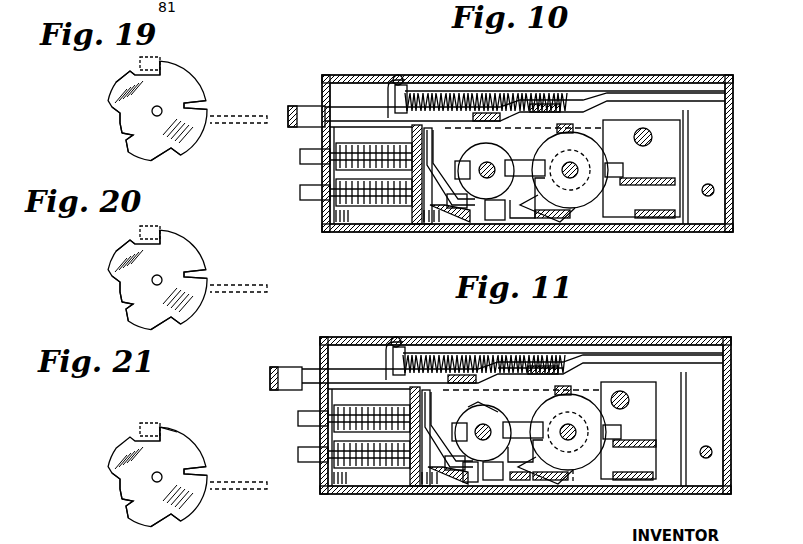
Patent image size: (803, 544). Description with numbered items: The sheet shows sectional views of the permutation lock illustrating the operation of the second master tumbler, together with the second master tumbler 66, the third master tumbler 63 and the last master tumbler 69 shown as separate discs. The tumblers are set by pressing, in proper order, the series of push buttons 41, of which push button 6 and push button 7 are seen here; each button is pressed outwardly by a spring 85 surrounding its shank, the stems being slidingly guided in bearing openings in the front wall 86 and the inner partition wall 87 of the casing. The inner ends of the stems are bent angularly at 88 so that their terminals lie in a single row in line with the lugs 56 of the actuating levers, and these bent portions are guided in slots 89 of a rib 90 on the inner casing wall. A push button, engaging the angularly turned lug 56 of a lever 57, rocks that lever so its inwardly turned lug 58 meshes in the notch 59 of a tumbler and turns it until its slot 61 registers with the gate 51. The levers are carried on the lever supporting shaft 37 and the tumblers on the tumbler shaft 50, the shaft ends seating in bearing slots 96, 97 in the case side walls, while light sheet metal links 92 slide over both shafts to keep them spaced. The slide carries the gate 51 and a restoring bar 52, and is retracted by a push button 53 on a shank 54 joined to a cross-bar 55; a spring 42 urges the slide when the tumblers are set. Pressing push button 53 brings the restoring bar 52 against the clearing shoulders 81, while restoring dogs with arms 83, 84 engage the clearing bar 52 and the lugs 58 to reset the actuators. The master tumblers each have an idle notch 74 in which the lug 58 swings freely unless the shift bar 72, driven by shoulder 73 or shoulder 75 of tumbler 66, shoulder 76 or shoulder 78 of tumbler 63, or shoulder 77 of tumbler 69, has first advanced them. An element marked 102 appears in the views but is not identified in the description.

In FIG. 10, the second master push button 6 is at (315, 157).
In FIG. 11, the second master push button 6 is at (313, 419).
In FIG. 10, the push button 7 is at (296, 182).
In FIG. 11, the push button 7 is at (313, 455).
In FIG. 10, the lever supporting shaft 37 is at (490, 168).
In FIG. 11, the lever supporting shaft 37 is at (475, 428).
In FIG. 10, the push buttons 41 is at (305, 175).
In FIG. 10, the spring 42 is at (538, 90).
In FIG. 11, the spring 42 is at (484, 347).
In FIG. 11, the tumbler shaft 50 is at (575, 432).
In FIG. 10, the transverse bar (gate) 51 is at (650, 180).
In FIG. 19, the transverse bar (gate) 51 is at (238, 111).
In FIG. 20, the transverse bar (gate) 51 is at (238, 279).
In FIG. 21, the transverse bar (gate) 51 is at (238, 477).
In FIG. 11, the restoring bar 52 is at (550, 489).
In FIG. 10, the push button 53 is at (302, 105).
In FIG. 11, the push button 53 is at (286, 366).
In FIG. 10, the shank 54 is at (360, 107).
In FIG. 11, the shank 54 is at (512, 364).
In FIG. 11, the cross-bar 55 is at (504, 371).
In FIG. 10, the angularly turned lug 56 is at (497, 214).
In FIG. 11, the angularly turned lug 56 is at (473, 487).
In FIG. 10, the lever 57 is at (521, 212).
In FIG. 11, the lever 57 is at (493, 484).
In FIG. 10, the inwardly turned lug 58 is at (550, 222).
In FIG. 11, the inwardly turned lug 58 is at (519, 489).
In FIG. 19, the slot (notch) 59 is at (113, 145).
In FIG. 20, the slot (notch) 59 is at (115, 313).
In FIG. 21, the slot (notch) 59 is at (113, 513).
In FIG. 19, the slot 61 is at (211, 99).
In FIG. 20, the slot 61 is at (209, 265).
In FIG. 21, the slot 61 is at (211, 462).
In FIG. 20, the third master tumbler 63 is at (166, 279).
In FIG. 10, the second master tumbler 66 is at (590, 205).
In FIG. 11, the second master tumbler 66 is at (574, 484).
In FIG. 19, the second master tumbler 66 is at (171, 111).
In FIG. 21, the third master tumbler (fourth master) 69 is at (166, 475).
In FIG. 10, the shift bar 72 is at (572, 124).
In FIG. 11, the shift bar 72 is at (606, 378).
In FIG. 19, the shift bar 72 is at (153, 54).
In FIG. 20, the shift bar 72 is at (150, 223).
In FIG. 21, the shift bar 72 is at (155, 420).
In FIG. 19, the shoulder 73 is at (182, 62).
In FIG. 19, the idle notch 74 is at (104, 120).
In FIG. 20, the idle notch 74 is at (101, 289).
In FIG. 21, the idle notch 74 is at (104, 486).
In FIG. 19, the shoulder 75 is at (122, 67).
In FIG. 20, the shoulder 76 is at (181, 228).
In FIG. 21, the shoulder 77 is at (185, 422).
In FIG. 20, the shoulder 78 is at (117, 236).
In FIG. 19, the clearing shoulders 81 is at (166, 160).
In FIG. 20, the clearing shoulders 81 is at (166, 328).
In FIG. 21, the clearing shoulders 81 is at (166, 526).
In FIG. 11, the arm 83 is at (584, 494).
In FIG. 11, the arm 84 is at (523, 456).
In FIG. 10, the springs 85 is at (385, 150).
In FIG. 11, the springs 85 is at (369, 429).
In FIG. 11, the front wall 86 is at (309, 437).
In FIG. 11, the inner partition wall 87 is at (403, 436).
In FIG. 10, the angularly bent inner end 88 is at (432, 152).
In FIG. 11, the angularly bent inner end 88 is at (438, 452).
In FIG. 10, the slots 89 is at (470, 212).
In FIG. 11, the slots 89 is at (447, 488).
In FIG. 10, the rib (flange) 90 is at (450, 216).
In FIG. 11, the rib (flange) 90 is at (448, 503).
In FIG. 11, the links 92 is at (523, 419).
In FIG. 10, the bearing slot 96 is at (510, 160).
In FIG. 11, the bearing slot 96 is at (483, 399).
In FIG. 10, the bearing slot 97 is at (576, 150).
In FIG. 11, the bearing slot 97 is at (587, 401).
In FIG. 10, the mounting hole 102 is at (708, 184).
In FIG. 11, the mounting hole 102 is at (696, 436).